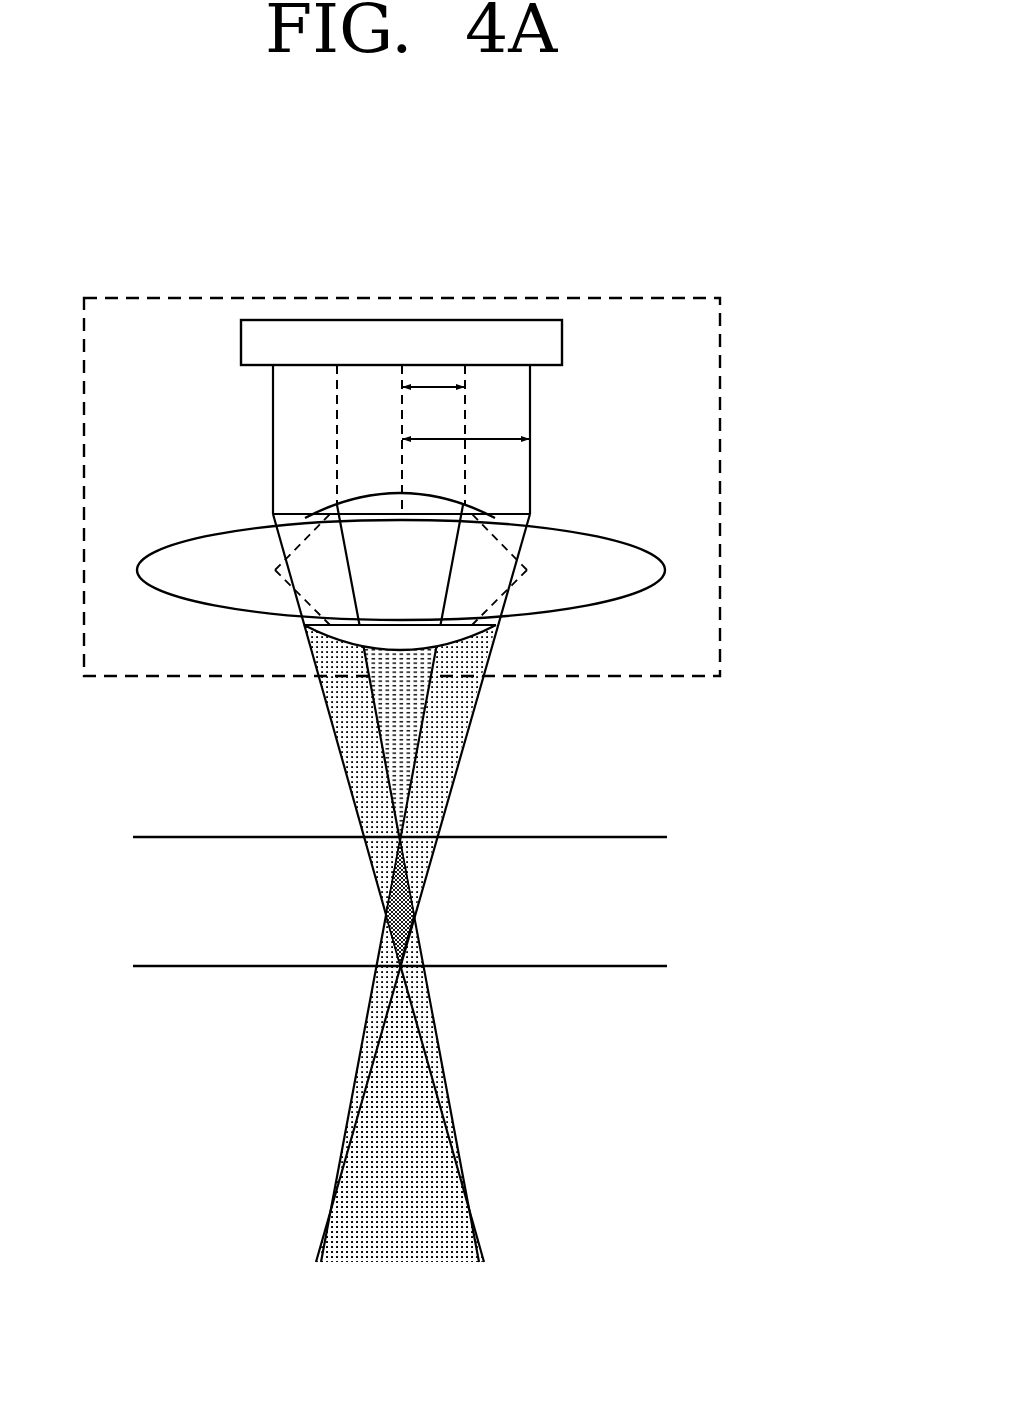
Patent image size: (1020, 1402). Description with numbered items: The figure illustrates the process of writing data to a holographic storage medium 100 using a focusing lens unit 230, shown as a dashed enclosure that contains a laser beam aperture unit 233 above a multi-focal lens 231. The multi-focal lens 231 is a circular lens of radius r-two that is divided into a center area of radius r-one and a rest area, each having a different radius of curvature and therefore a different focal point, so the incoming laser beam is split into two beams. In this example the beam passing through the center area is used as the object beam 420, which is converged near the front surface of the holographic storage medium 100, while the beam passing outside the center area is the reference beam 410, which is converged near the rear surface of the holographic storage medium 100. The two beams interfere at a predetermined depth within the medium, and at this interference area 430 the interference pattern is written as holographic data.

The holographic storage medium 100 is at (655, 907).
The focusing lens unit 230 is at (721, 452).
The multi-focal lens 231 is at (666, 570).
The laser beam aperture unit 233 is at (562, 337).
The reference beam 410 is at (377, 815).
The object beam 420 is at (410, 723).
The interference area 430 is at (415, 918).